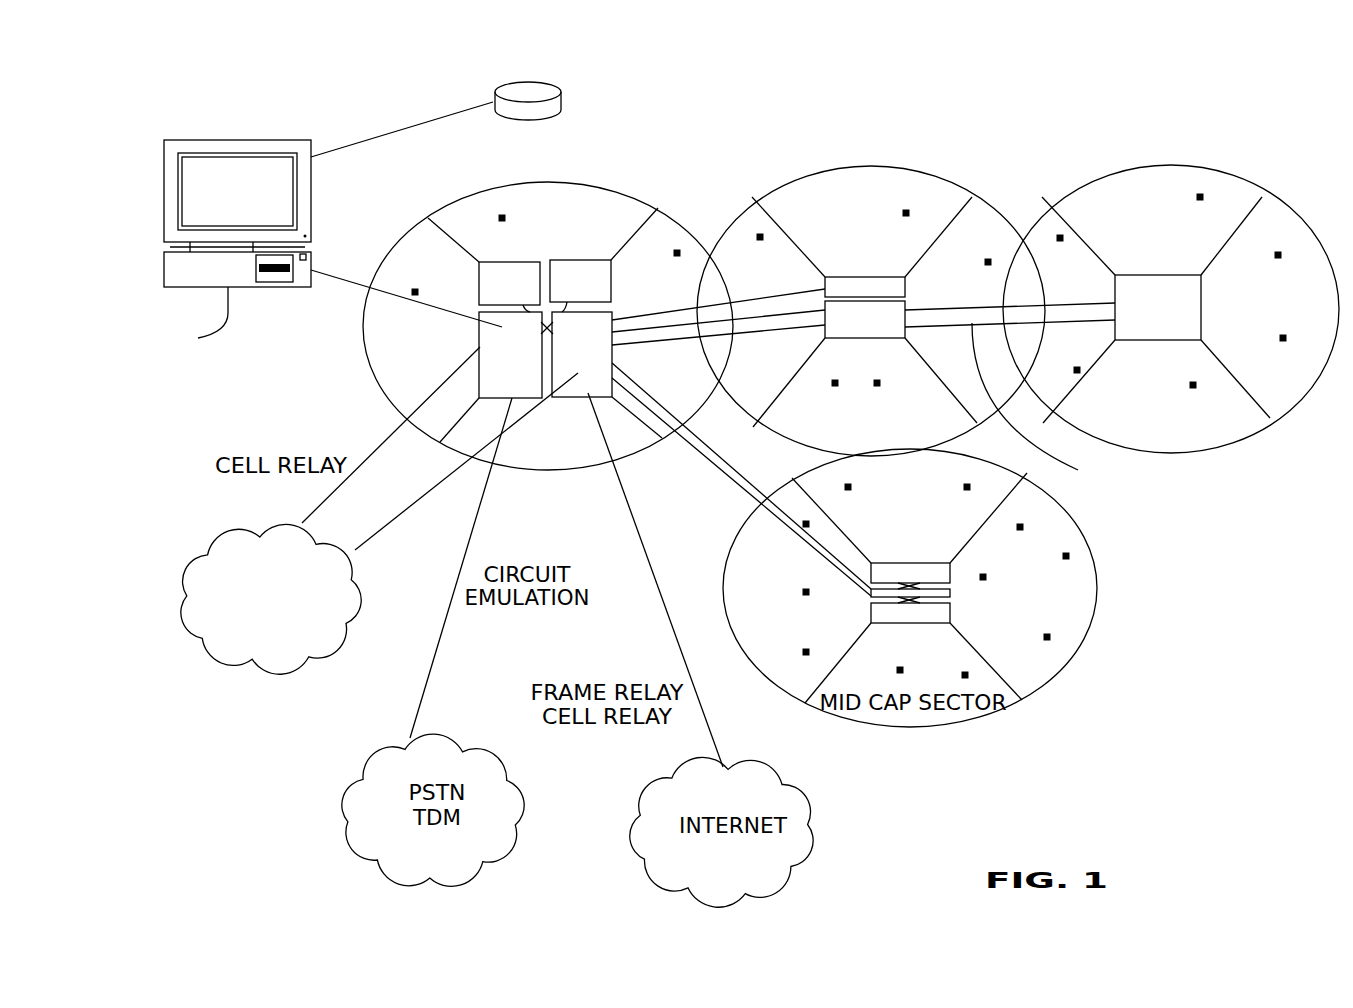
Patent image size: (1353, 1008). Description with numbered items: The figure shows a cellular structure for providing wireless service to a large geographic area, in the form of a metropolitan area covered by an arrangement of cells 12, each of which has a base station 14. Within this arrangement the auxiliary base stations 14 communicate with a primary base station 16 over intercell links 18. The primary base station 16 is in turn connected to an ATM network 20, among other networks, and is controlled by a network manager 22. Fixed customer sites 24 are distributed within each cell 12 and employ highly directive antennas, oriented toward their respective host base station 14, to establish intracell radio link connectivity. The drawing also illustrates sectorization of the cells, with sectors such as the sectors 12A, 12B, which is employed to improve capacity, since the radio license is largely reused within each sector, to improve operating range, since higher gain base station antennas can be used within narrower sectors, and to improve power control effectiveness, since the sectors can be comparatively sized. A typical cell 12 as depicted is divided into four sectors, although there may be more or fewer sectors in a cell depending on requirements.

The cell 12 is at (565, 195).
The cell sector 12A is at (872, 197).
The cell sector 12B is at (977, 228).
The base station 14 is at (1173, 315).
The primary base station 16 is at (497, 338).
The intercell link 18 is at (642, 312).
The ATM network 20 is at (215, 660).
The network manager 22 is at (354, 216).
The fixed customer site 24 is at (1205, 192).